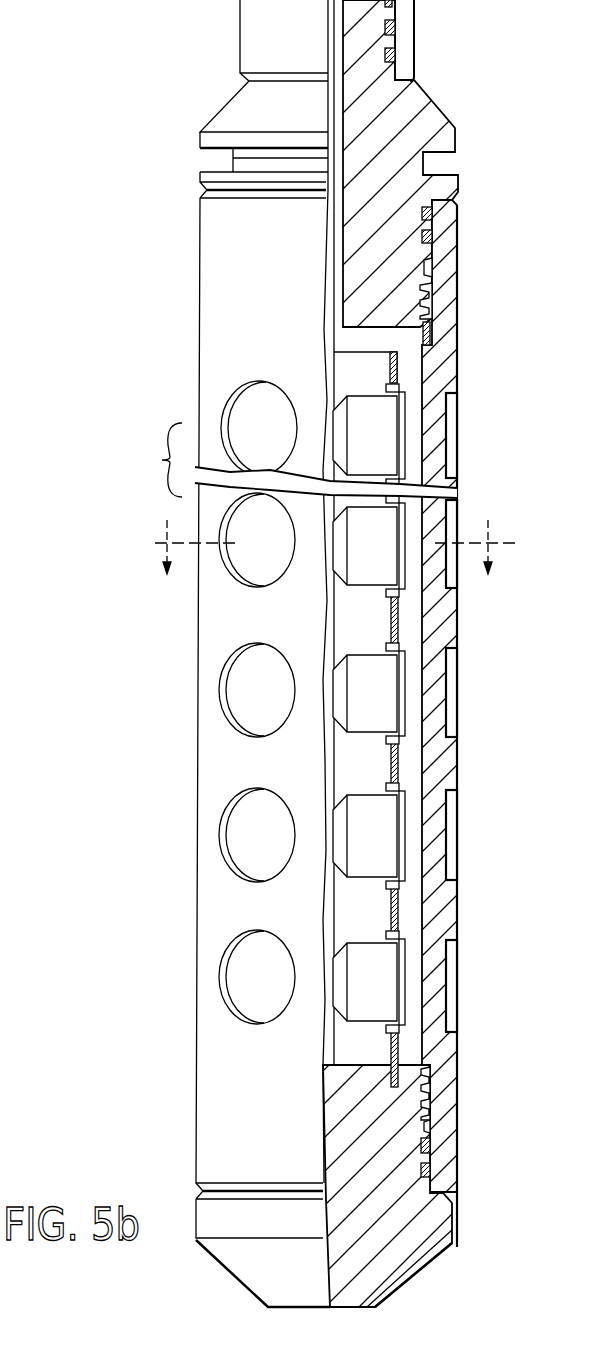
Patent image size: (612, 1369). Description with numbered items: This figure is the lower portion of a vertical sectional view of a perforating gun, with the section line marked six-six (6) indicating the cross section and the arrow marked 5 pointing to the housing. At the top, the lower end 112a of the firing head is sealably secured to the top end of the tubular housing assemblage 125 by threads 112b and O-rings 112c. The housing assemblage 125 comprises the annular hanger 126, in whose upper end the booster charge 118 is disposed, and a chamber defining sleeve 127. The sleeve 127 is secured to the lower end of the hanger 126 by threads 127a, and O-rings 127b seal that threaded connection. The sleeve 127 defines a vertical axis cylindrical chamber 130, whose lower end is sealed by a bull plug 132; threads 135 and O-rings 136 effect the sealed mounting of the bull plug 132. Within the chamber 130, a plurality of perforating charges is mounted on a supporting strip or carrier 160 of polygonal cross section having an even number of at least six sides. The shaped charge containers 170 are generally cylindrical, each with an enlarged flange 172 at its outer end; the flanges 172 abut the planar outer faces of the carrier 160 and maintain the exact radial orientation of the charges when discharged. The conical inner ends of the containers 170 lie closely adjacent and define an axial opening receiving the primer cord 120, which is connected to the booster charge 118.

The section view indicator 5 is at (466, 252).
The section line 6- 6 is at (331, 545).
The lower end of firing head 112a is at (415, 15).
The threads 112b is at (392, 27).
The O-rings 112c is at (392, 58).
The booster charge 118 is at (273, 0).
The primer cord 120 is at (331, 303).
The tubular housing assemblage 125 is at (463, 361).
The annular housing hanger 126 is at (416, 100).
The chamber defining sleeve 127 is at (443, 330).
The threads 127a is at (440, 290).
The O-rings 127b is at (431, 236).
The vertical axis cylindrical chamber 130 is at (418, 775).
The bull plug 132 is at (396, 1082).
The threads 135 is at (431, 1093).
The O-rings 136 is at (431, 1172).
The carrier 160 is at (400, 621).
The shaped charge containers 170 is at (372, 437).
The flange 172 is at (410, 943).